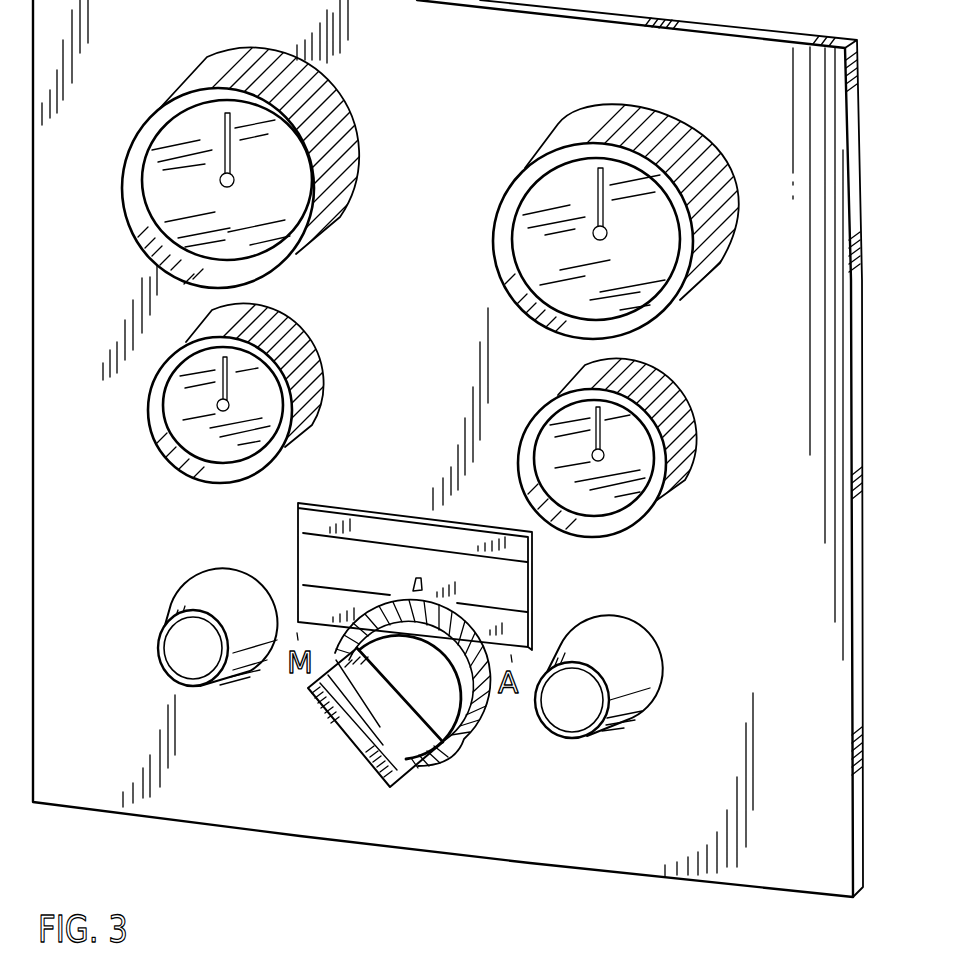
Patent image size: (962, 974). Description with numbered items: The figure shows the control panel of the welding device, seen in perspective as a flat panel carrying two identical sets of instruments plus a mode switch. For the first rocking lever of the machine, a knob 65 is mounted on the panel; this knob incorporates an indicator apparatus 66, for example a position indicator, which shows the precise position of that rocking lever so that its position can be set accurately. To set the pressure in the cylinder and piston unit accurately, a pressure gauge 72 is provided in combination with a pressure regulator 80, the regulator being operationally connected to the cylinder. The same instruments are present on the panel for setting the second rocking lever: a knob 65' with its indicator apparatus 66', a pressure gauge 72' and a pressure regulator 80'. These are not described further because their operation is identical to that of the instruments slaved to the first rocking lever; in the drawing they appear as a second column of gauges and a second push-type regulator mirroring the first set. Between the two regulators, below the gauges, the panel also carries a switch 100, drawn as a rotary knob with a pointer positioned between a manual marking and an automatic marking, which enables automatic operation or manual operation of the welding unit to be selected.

The knob 65 is at (303, 164).
The indicator apparatus 66 is at (286, 180).
The knob 65' is at (683, 205).
The indicator apparatus 66' is at (662, 239).
The pressure gauge 72 is at (297, 386).
The pressure gauge 72' is at (667, 438).
The pressure regulator 80 is at (210, 608).
The pressure regulator 80' is at (629, 669).
The switch 100 is at (385, 722).